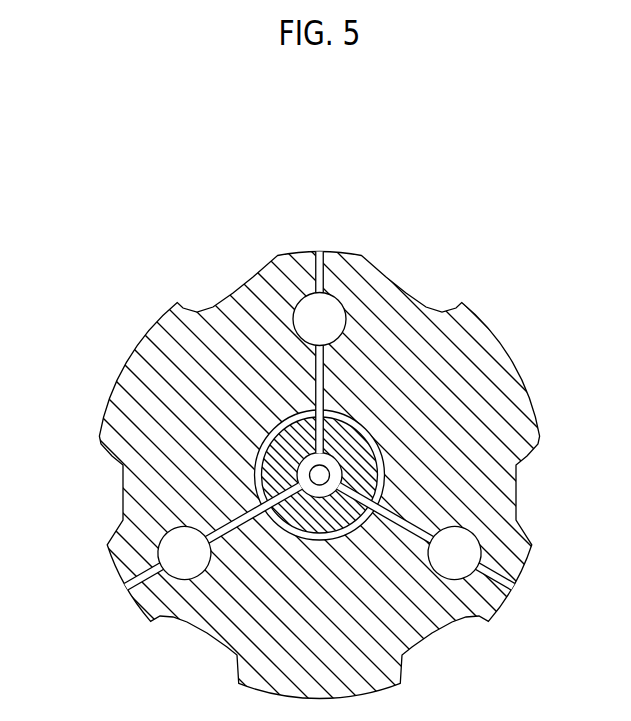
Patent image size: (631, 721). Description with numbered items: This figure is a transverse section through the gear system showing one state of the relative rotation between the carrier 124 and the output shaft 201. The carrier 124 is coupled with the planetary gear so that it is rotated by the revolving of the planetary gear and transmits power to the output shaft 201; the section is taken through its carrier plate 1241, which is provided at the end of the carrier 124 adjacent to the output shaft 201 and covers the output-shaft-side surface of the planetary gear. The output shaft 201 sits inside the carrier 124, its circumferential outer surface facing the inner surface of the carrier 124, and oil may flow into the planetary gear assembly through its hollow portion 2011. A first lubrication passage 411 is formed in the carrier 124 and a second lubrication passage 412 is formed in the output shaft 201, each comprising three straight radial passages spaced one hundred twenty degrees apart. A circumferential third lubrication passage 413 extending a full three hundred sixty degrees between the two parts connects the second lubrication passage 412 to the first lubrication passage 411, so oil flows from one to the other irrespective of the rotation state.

The carrier 124 is at (315, 453).
The carrier plate 1241 is at (118, 393).
The first lubrication passage 411 is at (317, 280).
The second lubrication passage 412 is at (372, 478).
The third lubrication passage 413 is at (358, 427).
The output shaft 201 is at (281, 457).
The hollow portion 2011 is at (315, 487).